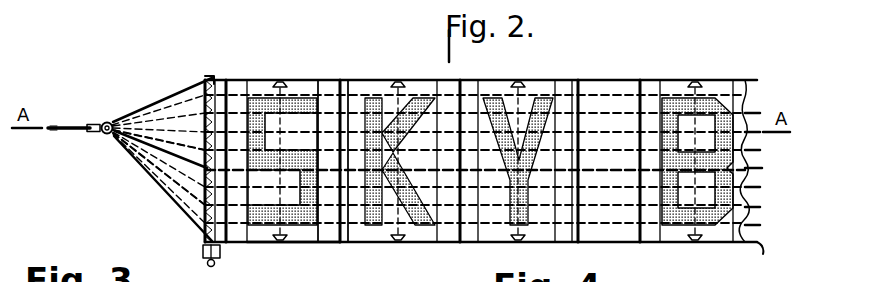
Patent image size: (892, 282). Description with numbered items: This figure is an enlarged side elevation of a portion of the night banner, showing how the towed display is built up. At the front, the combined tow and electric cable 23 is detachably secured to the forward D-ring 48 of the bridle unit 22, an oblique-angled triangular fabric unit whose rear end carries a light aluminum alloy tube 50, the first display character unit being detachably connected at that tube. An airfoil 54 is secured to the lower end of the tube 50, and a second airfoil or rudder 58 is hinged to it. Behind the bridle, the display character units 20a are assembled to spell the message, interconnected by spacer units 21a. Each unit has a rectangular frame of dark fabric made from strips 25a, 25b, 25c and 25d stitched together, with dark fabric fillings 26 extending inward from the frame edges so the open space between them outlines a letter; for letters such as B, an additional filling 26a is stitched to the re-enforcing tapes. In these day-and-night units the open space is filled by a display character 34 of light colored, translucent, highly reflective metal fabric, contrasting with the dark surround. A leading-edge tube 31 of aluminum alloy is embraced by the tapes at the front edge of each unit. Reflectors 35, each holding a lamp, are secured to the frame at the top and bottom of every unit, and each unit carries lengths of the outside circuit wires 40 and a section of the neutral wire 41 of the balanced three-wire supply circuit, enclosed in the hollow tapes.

The display character unit 20a is at (321, 68).
The spacer unit 21a is at (609, 148).
The bridle unit 22 is at (162, 159).
The combined tow and electric cable 23 is at (107, 135).
The strip 25a is at (233, 88).
The strip 25b is at (329, 87).
The strip 25c is at (311, 80).
The strip 25d is at (291, 243).
The fabric filling 26 is at (531, 68).
The fabric filling 26a is at (709, 130).
The leading-edge tube 31 is at (461, 81).
The display character 34 is at (543, 100).
The reflector 35 is at (516, 80).
The outside circuit wire 40 is at (752, 80).
The neutral wire 41 is at (757, 169).
The D-ring 48 is at (107, 122).
The tube 50 is at (211, 78).
The airfoil 54 is at (203, 250).
The rudder 58 is at (214, 266).